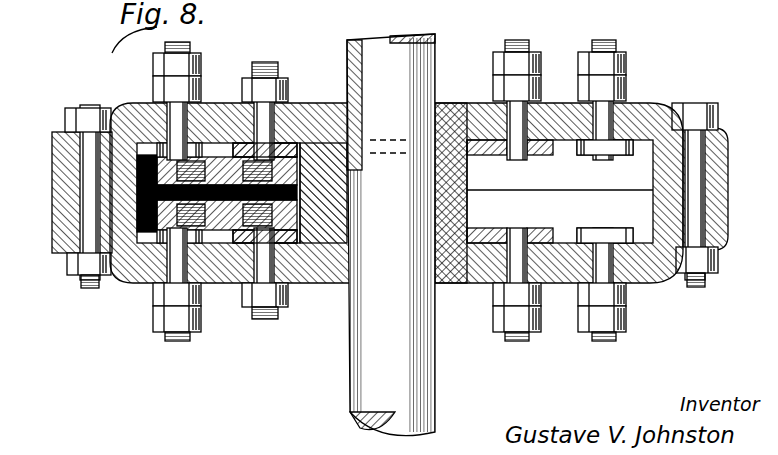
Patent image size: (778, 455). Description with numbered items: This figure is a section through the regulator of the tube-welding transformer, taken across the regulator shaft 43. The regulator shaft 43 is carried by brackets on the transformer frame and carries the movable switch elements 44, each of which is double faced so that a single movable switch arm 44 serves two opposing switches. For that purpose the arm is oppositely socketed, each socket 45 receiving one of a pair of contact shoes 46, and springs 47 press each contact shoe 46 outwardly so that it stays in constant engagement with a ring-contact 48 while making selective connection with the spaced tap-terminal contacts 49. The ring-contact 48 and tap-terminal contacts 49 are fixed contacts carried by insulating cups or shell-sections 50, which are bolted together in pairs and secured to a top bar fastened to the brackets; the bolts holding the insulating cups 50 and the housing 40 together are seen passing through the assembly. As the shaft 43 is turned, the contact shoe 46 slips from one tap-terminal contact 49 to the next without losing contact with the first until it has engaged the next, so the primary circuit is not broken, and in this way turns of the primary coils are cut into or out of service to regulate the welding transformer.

The housing 40 is at (117, 103).
The regulator shaft 43 is at (352, 424).
The movable switch element 44 is at (353, 193).
The socket 45 is at (53, 170).
The contact shoe 46 is at (53, 158).
The spring 47 is at (227, 102).
The ring-contact 48 is at (303, 102).
The tap-terminal contact 49 is at (185, 130).
The insulating cup or shell-section 50 is at (452, 113).